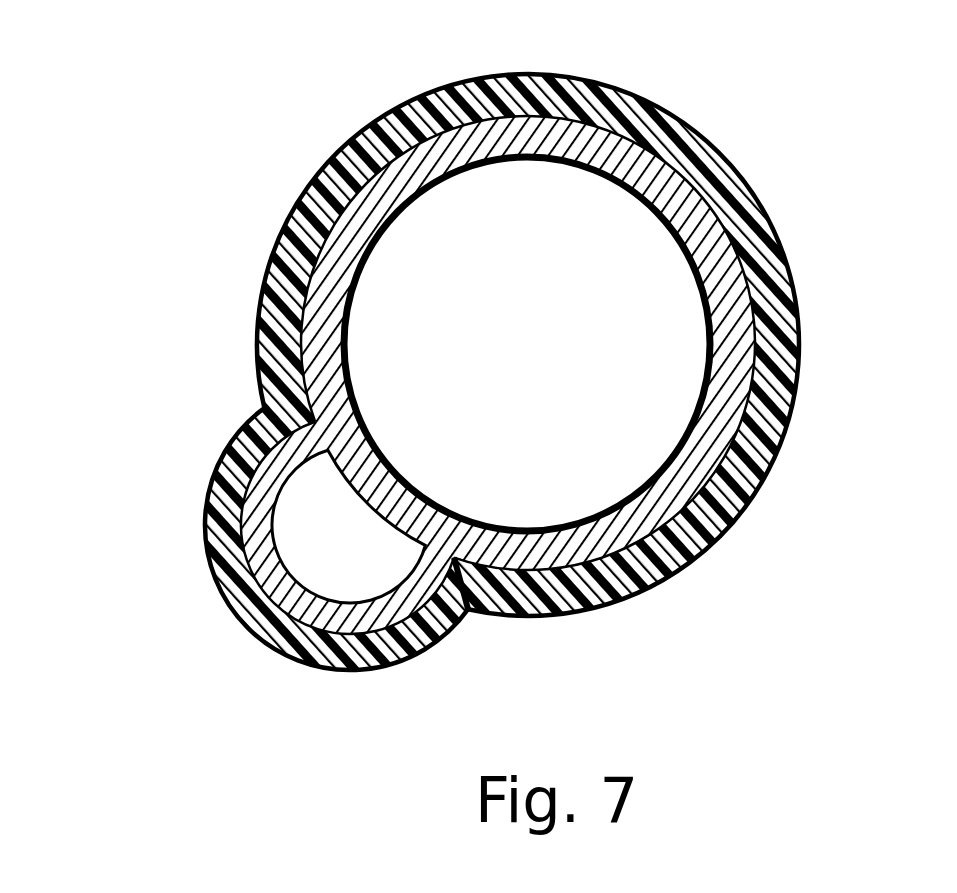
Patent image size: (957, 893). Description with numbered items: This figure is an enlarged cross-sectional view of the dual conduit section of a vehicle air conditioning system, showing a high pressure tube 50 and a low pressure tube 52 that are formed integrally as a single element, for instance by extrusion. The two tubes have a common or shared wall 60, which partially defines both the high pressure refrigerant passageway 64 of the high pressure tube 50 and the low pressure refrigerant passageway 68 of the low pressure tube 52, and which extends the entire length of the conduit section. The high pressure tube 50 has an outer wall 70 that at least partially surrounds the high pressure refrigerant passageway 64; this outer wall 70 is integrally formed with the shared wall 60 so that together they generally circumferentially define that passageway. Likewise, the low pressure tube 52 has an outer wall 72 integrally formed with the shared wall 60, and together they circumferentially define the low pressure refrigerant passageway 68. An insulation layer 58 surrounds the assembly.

The high pressure tube 50 is at (236, 575).
The low pressure tube 52 is at (714, 174).
The insulation layer 58 is at (758, 245).
The shared wall 60 is at (387, 497).
The high pressure refrigerant passageway 64 is at (347, 565).
The low pressure refrigerant passageway 68 is at (664, 345).
The outer wall 70 is at (288, 618).
The outer wall 72 is at (647, 180).